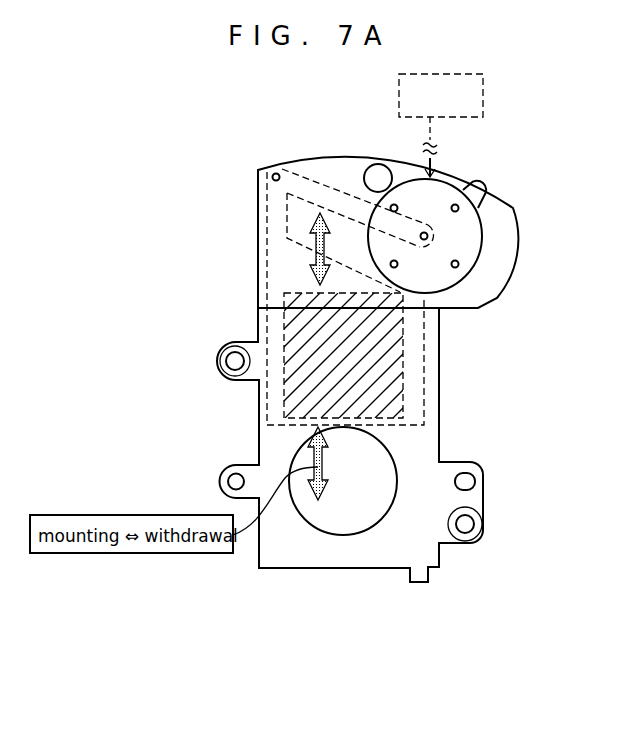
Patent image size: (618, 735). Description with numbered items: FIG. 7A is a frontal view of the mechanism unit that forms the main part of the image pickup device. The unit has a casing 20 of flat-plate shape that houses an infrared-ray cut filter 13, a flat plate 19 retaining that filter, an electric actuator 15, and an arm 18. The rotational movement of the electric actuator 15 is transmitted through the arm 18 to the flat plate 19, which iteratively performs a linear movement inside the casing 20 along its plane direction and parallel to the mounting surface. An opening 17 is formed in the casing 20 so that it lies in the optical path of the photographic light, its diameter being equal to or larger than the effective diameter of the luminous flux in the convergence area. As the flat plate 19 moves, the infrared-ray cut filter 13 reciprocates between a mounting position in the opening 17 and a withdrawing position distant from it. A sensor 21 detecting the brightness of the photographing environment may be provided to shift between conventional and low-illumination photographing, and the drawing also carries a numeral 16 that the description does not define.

The infrared-ray cut filter 13 is at (317, 392).
The electric actuator 15 is at (460, 233).
The chassis 16 is at (418, 448).
The opening 17 is at (360, 507).
The arm 18 is at (317, 192).
The flat plate 19 is at (290, 273).
The casing 20 is at (347, 552).
The sensor 21 is at (487, 98).